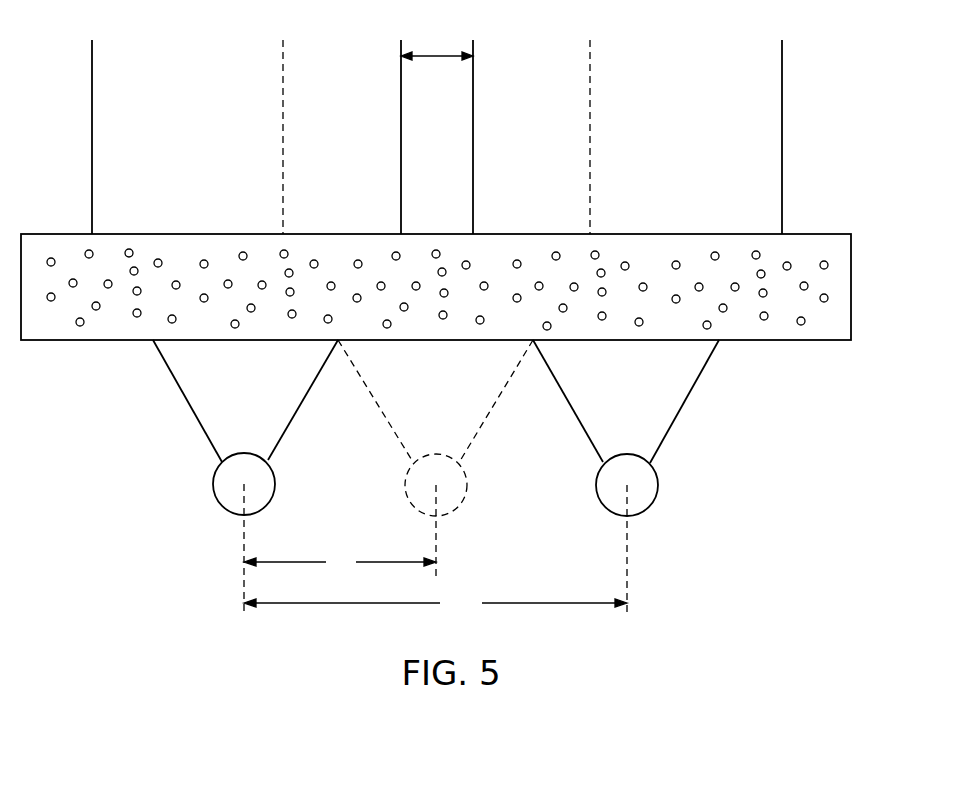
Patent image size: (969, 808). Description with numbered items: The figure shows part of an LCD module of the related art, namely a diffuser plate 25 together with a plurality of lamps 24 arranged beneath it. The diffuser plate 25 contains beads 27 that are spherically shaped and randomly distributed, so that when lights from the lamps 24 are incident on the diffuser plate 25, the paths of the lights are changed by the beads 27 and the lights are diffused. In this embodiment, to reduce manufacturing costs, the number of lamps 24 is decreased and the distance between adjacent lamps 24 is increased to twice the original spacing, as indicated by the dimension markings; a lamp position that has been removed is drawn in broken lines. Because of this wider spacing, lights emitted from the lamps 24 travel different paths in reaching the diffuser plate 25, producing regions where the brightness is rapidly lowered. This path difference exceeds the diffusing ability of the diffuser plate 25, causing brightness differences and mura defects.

The lamps 24 is at (227, 488).
The diffuser plate 25 is at (836, 172).
The beads 27 is at (627, 261).